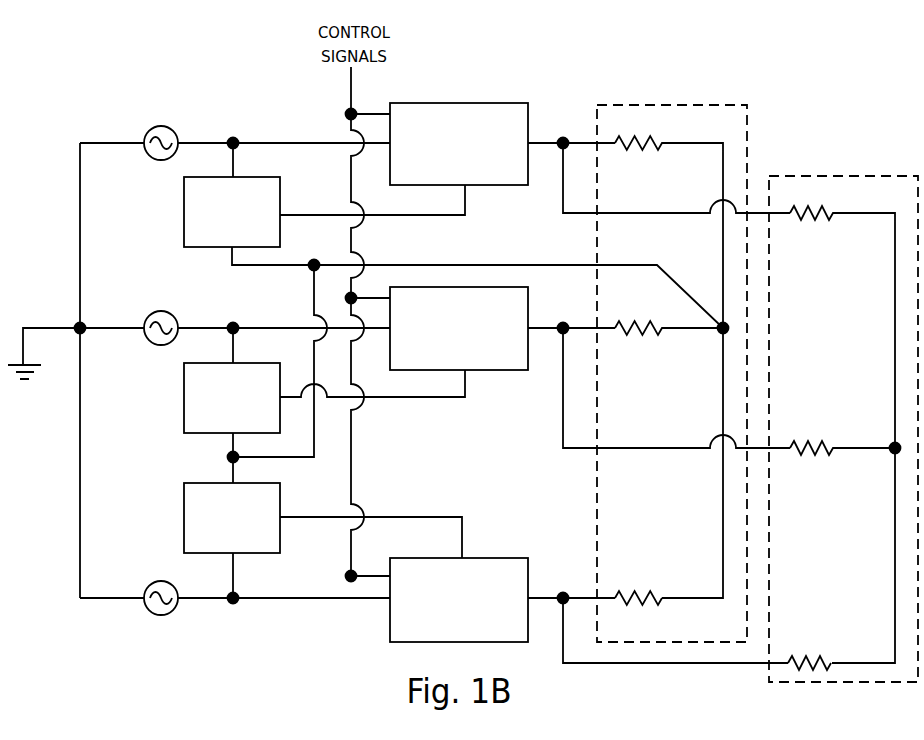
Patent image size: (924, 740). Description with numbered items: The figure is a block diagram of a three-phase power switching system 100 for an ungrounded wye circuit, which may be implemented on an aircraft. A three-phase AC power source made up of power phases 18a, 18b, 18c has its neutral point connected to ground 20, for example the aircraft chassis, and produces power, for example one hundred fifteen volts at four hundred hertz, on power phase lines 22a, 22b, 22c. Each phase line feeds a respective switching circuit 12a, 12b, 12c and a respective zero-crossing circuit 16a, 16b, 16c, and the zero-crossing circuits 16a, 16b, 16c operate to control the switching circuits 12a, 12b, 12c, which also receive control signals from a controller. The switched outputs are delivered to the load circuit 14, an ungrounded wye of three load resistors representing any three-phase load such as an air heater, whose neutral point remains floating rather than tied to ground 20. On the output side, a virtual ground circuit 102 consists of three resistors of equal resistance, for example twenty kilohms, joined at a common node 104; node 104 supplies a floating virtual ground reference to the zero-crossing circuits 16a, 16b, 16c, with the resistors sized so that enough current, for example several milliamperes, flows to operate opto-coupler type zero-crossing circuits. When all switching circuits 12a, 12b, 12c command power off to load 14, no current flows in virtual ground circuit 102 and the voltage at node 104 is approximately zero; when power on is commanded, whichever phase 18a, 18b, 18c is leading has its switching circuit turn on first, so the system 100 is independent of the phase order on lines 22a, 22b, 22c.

The three-phase power switching system 100 is at (820, 89).
The virtual ground circuit 102 is at (633, 149).
The common node 104 is at (721, 326).
The load circuit 14 is at (806, 217).
The switching circuit 12a is at (446, 176).
The switching circuit 12b is at (446, 360).
The switching circuit 12c is at (446, 631).
The zero-crossing circuit 16a is at (262, 177).
The zero-crossing circuit 16b is at (255, 363).
The zero-crossing circuit 16c is at (184, 495).
The power phase 18a is at (160, 126).
The power phase 18b is at (160, 311).
The power phase 18c is at (159, 582).
The ground 20 is at (23, 384).
The power phase line 22a is at (205, 140).
The power phase line 22b is at (205, 326).
The power phase line 22c is at (188, 603).